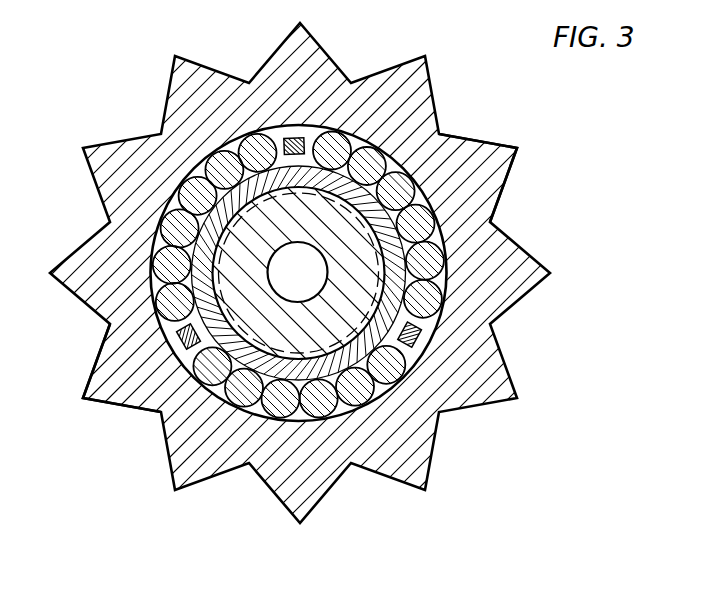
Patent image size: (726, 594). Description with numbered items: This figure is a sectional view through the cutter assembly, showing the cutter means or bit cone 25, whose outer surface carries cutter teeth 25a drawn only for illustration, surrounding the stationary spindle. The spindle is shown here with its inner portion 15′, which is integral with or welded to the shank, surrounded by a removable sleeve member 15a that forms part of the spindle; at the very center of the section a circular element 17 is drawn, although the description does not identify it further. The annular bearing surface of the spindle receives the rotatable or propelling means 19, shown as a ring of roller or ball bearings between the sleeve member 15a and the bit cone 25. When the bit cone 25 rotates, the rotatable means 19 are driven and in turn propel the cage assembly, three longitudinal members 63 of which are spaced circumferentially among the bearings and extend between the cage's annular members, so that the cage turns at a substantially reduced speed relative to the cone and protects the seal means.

The sleeve member 15a is at (352, 172).
The spindle portion 15′ is at (350, 290).
The shaft 17 is at (298, 273).
The rotatable or propelling means 19 is at (320, 405).
The cutter means or bit cone 25 is at (493, 167).
The cutter teeth 25a is at (500, 197).
The longitudinal member 63 is at (114, 410).